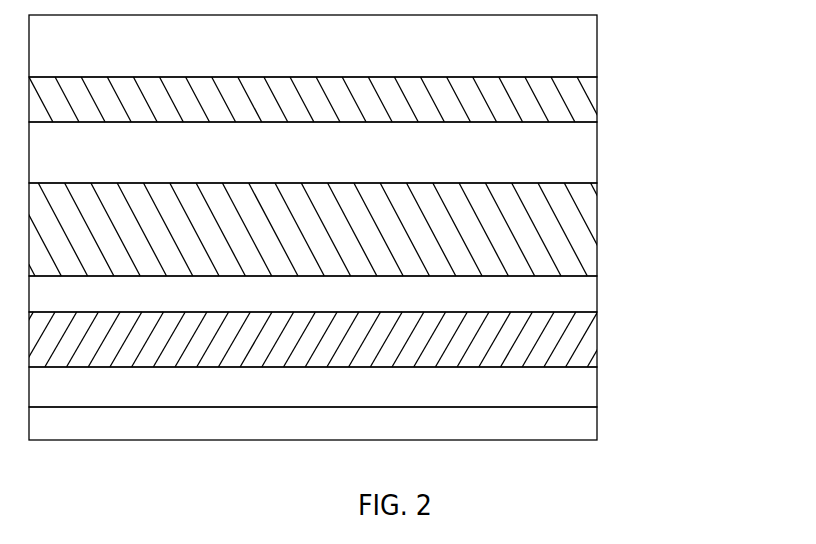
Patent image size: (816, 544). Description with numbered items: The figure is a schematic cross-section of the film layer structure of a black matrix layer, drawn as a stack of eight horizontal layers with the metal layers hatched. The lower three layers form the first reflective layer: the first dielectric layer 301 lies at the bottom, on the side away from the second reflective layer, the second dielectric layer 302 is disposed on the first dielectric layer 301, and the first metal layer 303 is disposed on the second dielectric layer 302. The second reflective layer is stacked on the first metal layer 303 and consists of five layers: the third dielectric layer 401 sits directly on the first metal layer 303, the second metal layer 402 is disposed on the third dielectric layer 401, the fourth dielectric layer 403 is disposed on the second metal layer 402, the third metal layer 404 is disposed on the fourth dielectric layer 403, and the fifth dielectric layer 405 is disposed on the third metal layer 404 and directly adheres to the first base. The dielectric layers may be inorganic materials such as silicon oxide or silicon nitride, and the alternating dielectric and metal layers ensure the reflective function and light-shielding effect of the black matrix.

The fifth dielectric layer 405 is at (597, 50).
The third metal layer 404 is at (597, 99).
The fourth dielectric layer 403 is at (597, 165).
The second metal layer 402 is at (597, 243).
The third dielectric layer 401 is at (597, 291).
The first metal layer 303 is at (597, 354).
The second dielectric layer 302 is at (597, 391).
The first dielectric layer 301 is at (597, 424).